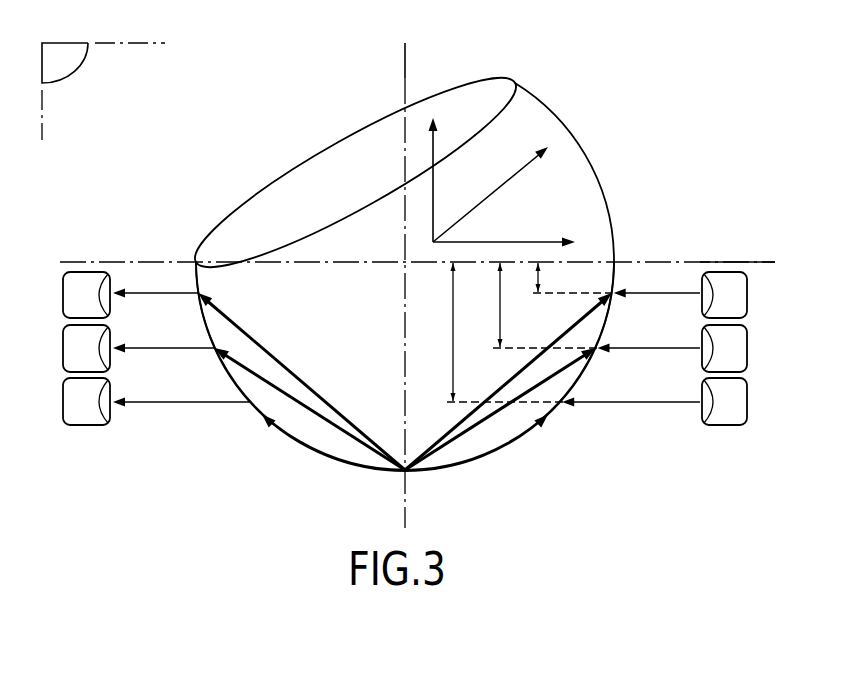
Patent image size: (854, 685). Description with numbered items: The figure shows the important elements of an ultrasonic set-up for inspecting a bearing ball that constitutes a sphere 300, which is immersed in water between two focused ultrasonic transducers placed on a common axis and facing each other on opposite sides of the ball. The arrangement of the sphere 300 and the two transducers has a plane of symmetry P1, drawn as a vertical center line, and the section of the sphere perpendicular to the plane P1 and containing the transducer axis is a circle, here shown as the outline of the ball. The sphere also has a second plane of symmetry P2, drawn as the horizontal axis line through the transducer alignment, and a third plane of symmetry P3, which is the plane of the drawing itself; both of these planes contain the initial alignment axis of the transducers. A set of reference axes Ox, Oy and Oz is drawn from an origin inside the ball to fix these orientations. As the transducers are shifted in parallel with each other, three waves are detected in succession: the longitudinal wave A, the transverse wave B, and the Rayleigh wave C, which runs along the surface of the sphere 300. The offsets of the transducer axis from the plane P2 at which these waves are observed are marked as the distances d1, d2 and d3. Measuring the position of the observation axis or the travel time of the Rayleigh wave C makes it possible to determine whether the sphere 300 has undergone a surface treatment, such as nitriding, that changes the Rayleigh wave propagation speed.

The sphere 300 is at (551, 112).
The plane of symmetry P1 is at (408, 58).
The second plane of symmetry P2 is at (752, 262).
The third plane of symmetry P3 is at (103, 91).
The longitudinal wave A is at (244, 333).
The transverse wave B is at (254, 372).
The Rayleigh wave C is at (297, 443).
The first distance d1 is at (559, 278).
The second distance d2 is at (537, 305).
The third distance d3 is at (496, 332).
The x axis Ox is at (502, 194).
The y axis Oy is at (506, 232).
The z axis Oz is at (445, 176).